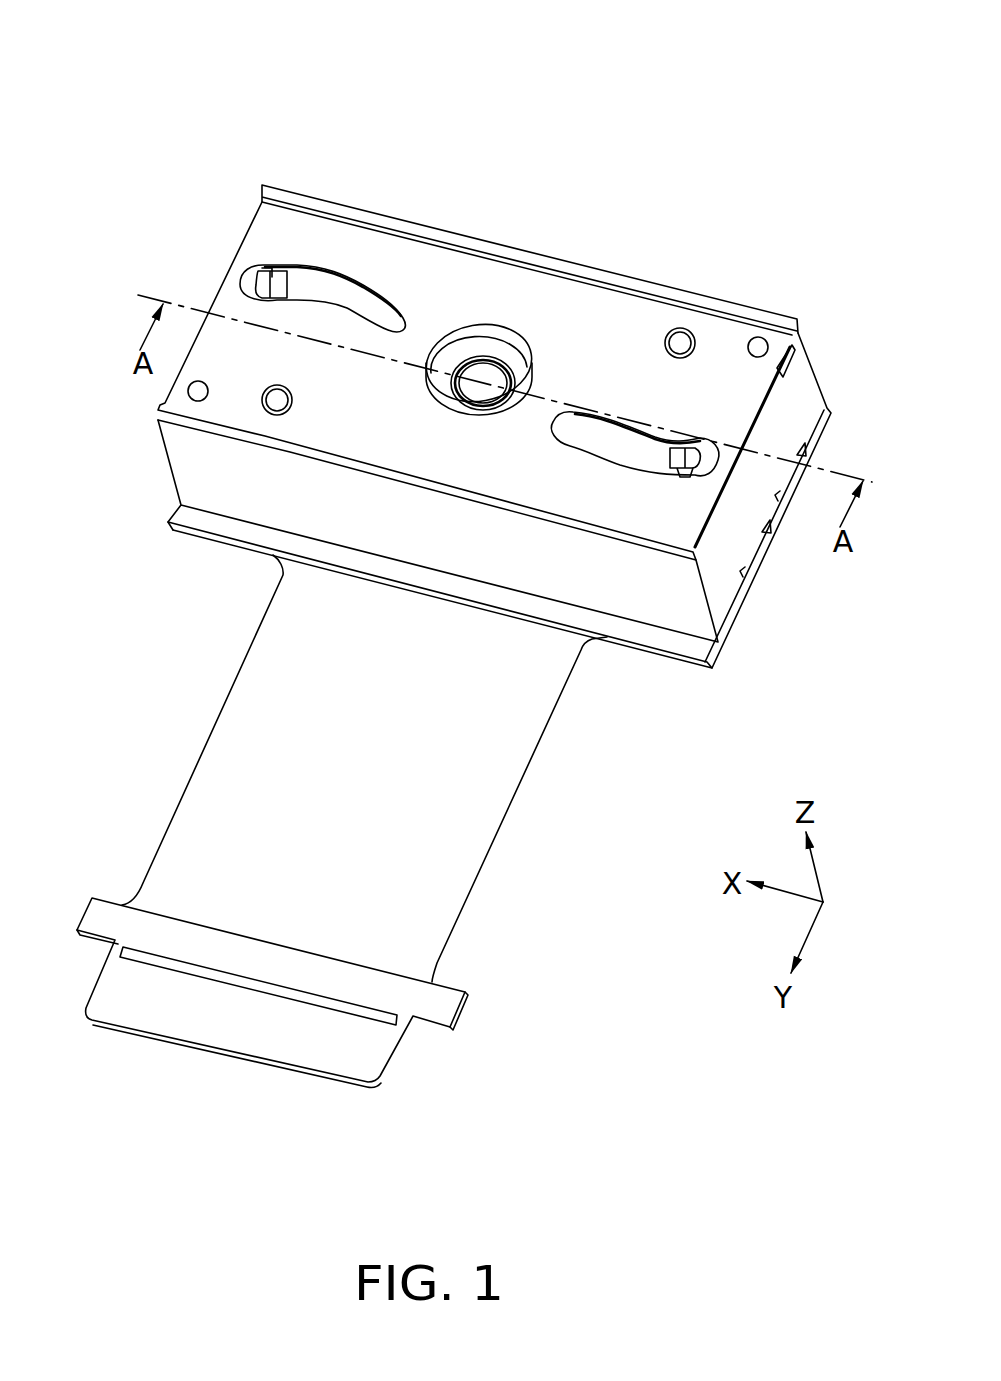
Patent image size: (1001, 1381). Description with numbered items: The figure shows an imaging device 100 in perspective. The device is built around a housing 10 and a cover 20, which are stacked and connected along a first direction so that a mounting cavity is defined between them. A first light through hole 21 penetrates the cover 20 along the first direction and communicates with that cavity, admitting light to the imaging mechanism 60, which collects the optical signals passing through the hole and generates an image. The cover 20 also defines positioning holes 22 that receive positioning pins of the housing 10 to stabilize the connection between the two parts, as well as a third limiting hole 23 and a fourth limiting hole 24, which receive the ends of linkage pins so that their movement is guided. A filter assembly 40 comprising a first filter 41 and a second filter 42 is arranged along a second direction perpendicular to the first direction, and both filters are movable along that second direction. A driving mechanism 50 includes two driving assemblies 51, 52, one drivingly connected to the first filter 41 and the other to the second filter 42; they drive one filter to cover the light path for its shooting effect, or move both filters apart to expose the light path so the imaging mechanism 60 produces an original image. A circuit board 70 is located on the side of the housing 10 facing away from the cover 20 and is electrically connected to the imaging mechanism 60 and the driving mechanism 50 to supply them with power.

The imaging device 100 is at (430, 35).
The housing 10 is at (730, 589).
The cover 20 is at (742, 398).
The first light through hole 21 is at (540, 350).
The positioning holes 22 is at (186, 389).
The third limiting hole 23 is at (659, 475).
The fourth limiting hole 24 is at (320, 272).
The filter assembly 40 is at (447, 128).
The first filter 41 is at (573, 428).
The second filter 42 is at (372, 300).
The driving mechanism 50 is at (90, 452).
The driving assemblies 51 is at (277, 287).
The second sensor 52 is at (670, 457).
The imaging mechanism 60 is at (487, 362).
The circuit board 70 is at (683, 652).